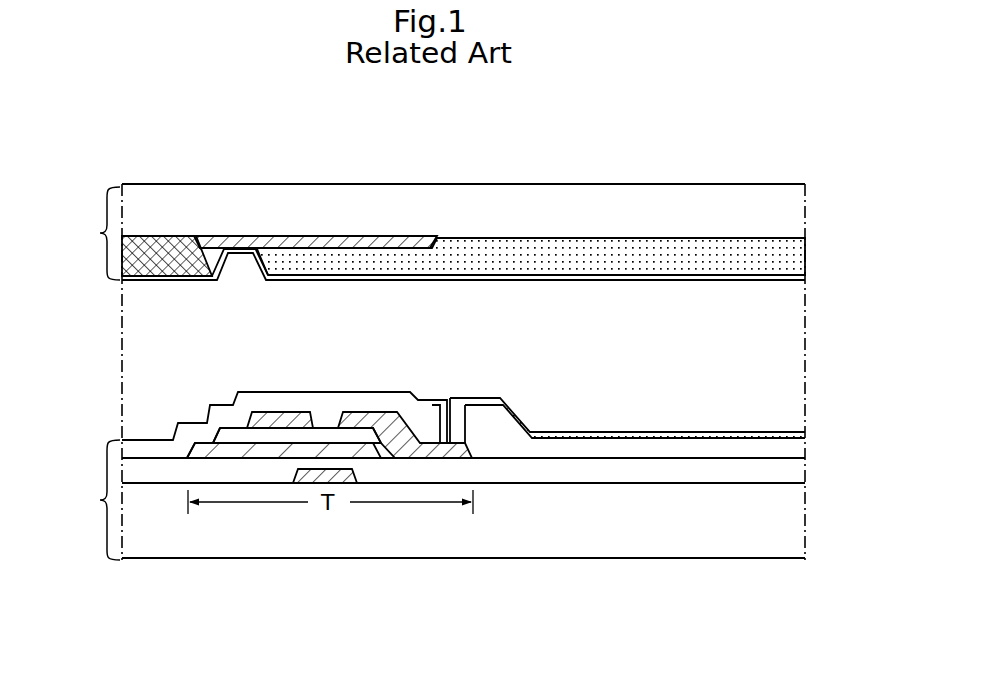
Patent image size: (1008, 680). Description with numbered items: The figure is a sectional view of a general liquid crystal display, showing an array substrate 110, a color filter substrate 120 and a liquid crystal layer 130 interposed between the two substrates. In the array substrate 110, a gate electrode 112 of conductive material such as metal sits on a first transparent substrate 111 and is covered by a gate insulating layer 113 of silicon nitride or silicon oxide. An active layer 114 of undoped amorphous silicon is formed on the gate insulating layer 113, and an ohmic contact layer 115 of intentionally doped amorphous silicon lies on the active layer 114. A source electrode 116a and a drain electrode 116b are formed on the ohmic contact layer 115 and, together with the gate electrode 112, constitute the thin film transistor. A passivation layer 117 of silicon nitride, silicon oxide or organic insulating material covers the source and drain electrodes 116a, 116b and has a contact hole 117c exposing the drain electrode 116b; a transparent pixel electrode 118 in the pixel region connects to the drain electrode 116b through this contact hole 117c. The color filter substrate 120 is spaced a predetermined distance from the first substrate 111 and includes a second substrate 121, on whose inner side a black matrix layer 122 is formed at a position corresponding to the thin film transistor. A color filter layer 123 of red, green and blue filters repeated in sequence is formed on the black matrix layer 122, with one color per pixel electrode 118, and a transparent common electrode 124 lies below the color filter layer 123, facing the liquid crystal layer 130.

The array substrate 110 is at (92, 500).
The first transparent substrate 111 is at (453, 545).
The gate electrode 112 is at (350, 484).
The gate insulating layer 113 is at (795, 472).
The active layer 114 is at (240, 447).
The ohmic contact layer 115 is at (232, 438).
The source electrode 116a is at (276, 414).
The drain electrode 116b is at (362, 413).
The passivation layer 117 is at (398, 393).
The contact hole 117c is at (455, 393).
The pixel electrode 118 is at (588, 432).
The color filter substrate 120 is at (93, 233).
The second substrate 121 is at (472, 190).
The black matrix layer 122 is at (297, 240).
The color filter layer 123 is at (155, 250).
The common electrode 124 is at (695, 278).
The liquid crystal layer 130 is at (122, 358).